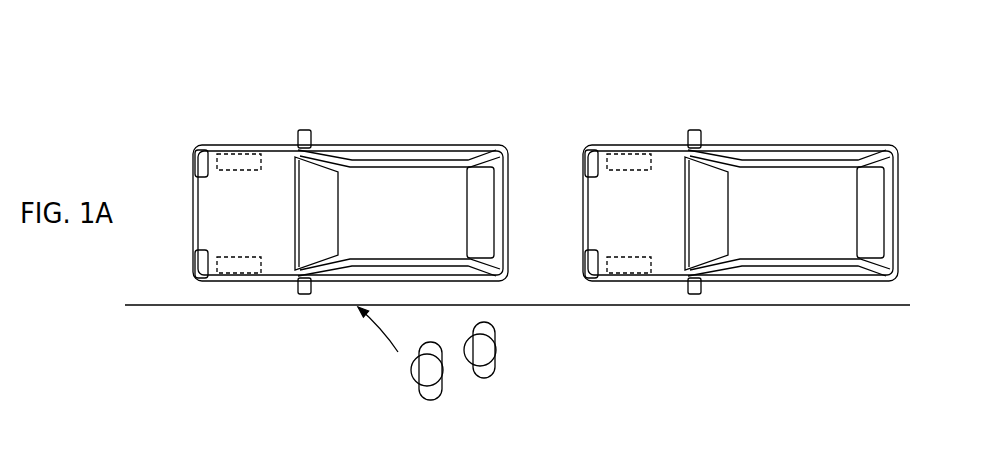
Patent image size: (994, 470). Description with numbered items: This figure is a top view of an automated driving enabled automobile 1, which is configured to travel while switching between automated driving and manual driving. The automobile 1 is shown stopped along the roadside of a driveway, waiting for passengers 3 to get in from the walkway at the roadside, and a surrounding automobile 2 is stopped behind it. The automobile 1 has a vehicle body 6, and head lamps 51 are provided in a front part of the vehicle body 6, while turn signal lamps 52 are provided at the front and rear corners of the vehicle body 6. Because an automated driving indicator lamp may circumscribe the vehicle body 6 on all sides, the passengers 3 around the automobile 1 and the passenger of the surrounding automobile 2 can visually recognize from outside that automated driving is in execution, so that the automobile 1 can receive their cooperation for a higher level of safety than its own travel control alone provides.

The automobile 1 is at (393, 118).
The surrounding automobile 2 is at (767, 148).
The passengers 3 is at (445, 388).
The vehicle body 6 is at (283, 143).
The head lamps 51 is at (190, 158).
The turn signal lamps 52 is at (200, 149).